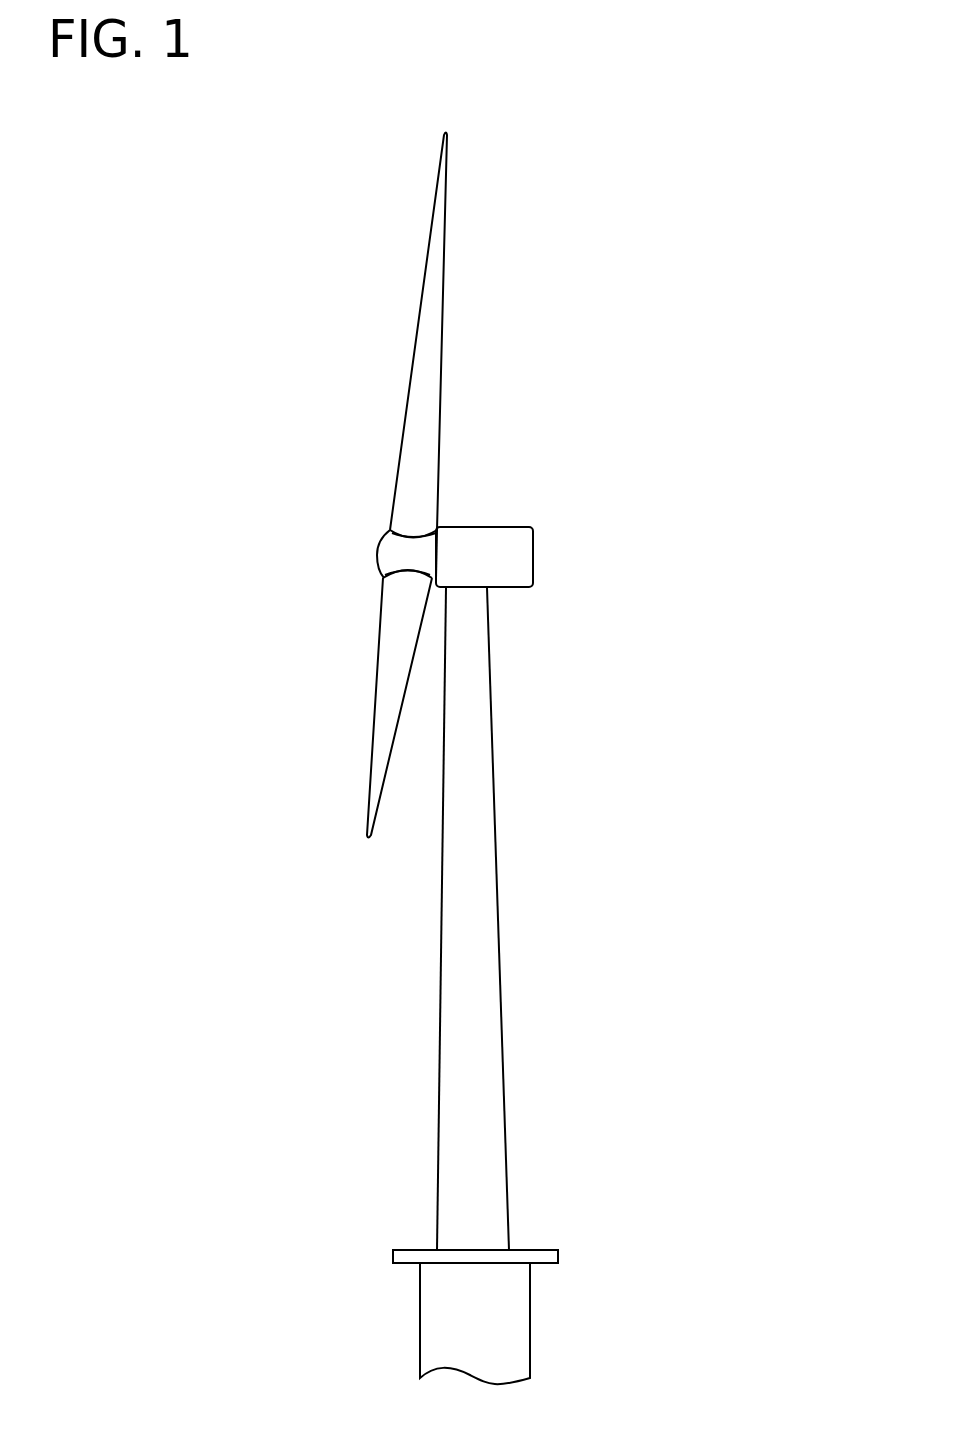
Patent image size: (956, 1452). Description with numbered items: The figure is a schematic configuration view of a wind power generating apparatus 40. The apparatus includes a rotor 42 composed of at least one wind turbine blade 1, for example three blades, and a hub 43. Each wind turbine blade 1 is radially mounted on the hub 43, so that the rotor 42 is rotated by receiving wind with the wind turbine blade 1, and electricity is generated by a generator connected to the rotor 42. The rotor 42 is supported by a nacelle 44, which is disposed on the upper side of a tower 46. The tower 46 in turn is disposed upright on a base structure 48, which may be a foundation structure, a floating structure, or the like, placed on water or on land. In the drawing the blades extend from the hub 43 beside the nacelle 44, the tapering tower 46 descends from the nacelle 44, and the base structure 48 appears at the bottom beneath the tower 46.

The wind turbine blade 1 is at (424, 272).
The wind power generating apparatus 40 is at (665, 274).
The rotor 42 is at (324, 521).
The hub 43 is at (378, 554).
The nacelle 44 is at (533, 553).
The tower 46 is at (499, 922).
The base structure 48 is at (530, 1323).